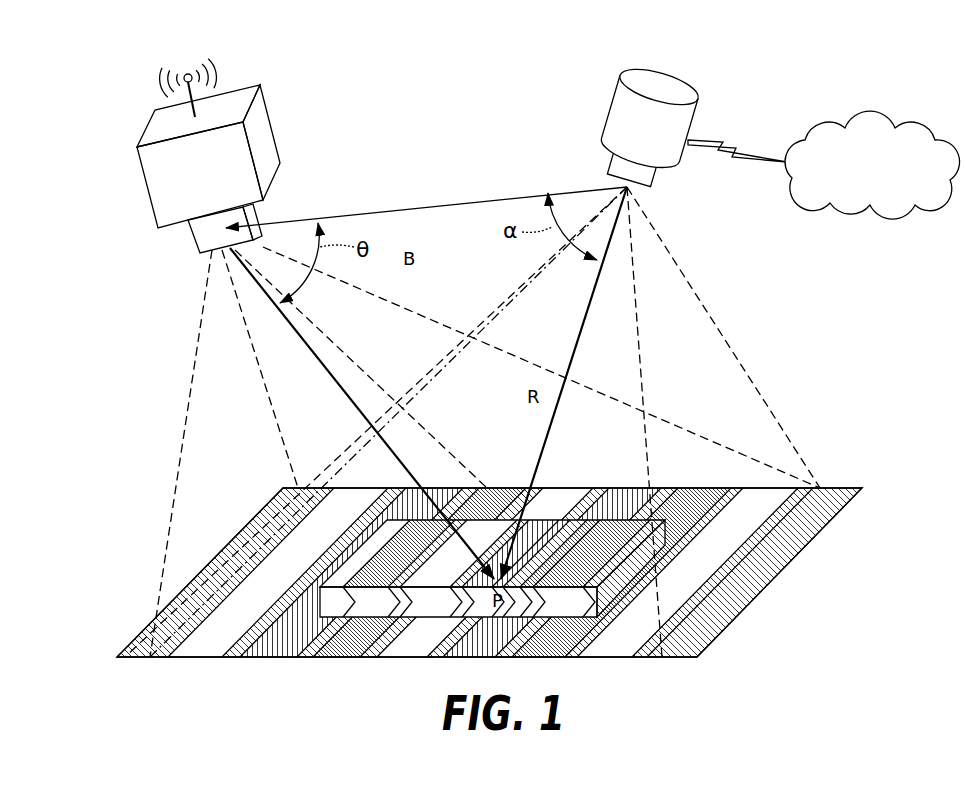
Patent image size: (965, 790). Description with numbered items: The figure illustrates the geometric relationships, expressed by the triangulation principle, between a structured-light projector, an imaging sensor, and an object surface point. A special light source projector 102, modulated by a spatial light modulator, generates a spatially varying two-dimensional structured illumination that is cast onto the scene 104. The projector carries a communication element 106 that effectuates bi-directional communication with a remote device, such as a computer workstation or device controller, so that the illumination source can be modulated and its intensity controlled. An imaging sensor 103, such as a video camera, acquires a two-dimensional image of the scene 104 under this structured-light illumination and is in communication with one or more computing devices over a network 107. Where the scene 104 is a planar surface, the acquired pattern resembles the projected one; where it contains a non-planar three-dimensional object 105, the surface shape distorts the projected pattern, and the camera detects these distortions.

The light source projector 102 is at (239, 78).
The imaging sensor 103 is at (661, 86).
The scene 104 is at (786, 575).
The 3D object 105 is at (316, 603).
The communication element 106 is at (190, 100).
The network 107 is at (874, 208).